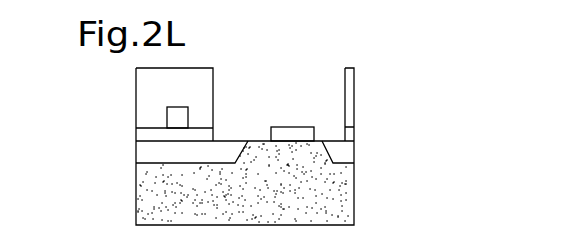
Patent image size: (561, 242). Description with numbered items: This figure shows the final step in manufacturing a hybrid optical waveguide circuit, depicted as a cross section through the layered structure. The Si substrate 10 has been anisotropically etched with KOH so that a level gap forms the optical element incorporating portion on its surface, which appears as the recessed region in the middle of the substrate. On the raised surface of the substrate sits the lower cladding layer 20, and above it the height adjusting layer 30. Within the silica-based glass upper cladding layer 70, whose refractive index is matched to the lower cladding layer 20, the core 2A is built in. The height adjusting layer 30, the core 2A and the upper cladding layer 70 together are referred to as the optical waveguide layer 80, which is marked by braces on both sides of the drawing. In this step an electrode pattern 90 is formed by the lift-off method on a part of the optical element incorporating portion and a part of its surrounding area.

The Si substrate 10 is at (355, 188).
The lower cladding layer 20 is at (136, 154).
The height adjusting layer 30 is at (136, 134).
The upper cladding layer 70 is at (136, 90).
The optical waveguide layer 80 is at (83, 67).
The core 2A is at (167, 121).
The electrode pattern 90 is at (283, 127).